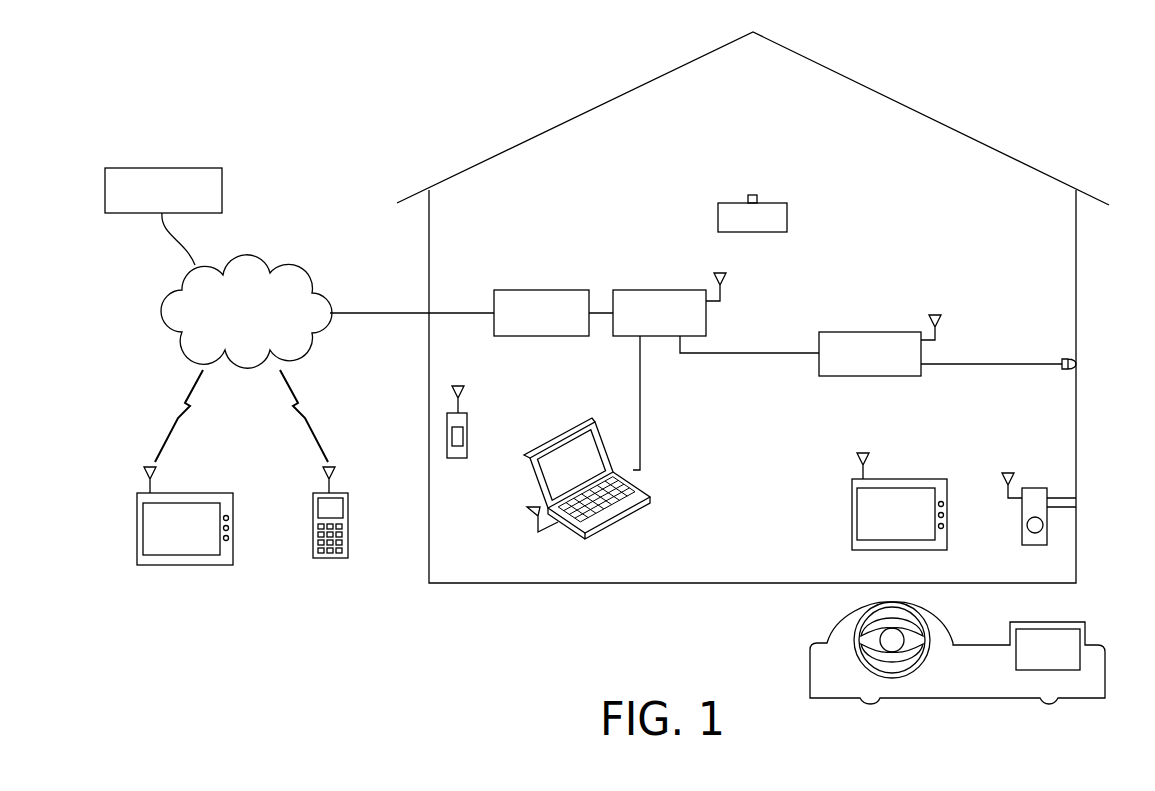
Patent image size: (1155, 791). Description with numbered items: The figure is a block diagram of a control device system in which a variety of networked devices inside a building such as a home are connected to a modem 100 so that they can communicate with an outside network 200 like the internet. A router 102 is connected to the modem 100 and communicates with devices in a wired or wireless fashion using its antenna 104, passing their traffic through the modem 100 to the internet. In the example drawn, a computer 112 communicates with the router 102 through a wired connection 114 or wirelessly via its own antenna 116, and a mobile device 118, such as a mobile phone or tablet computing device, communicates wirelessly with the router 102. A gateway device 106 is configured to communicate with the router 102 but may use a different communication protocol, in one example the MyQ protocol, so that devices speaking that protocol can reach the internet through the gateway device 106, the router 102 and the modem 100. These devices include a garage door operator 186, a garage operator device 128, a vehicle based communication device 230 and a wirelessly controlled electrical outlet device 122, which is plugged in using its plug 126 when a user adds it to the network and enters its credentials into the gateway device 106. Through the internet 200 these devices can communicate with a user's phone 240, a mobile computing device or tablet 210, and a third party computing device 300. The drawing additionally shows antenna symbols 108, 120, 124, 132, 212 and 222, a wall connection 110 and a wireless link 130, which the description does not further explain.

The modem 100 is at (547, 290).
The router 102 is at (658, 290).
The antenna 104 is at (723, 271).
The gateway device 106 is at (870, 332).
The gateway antenna 108 is at (937, 313).
The wired connection 110 is at (1067, 357).
The computer 112 is at (645, 483).
The wired connection 114 is at (640, 400).
The antenna 116 is at (530, 507).
The mobile device 118 is at (900, 550).
The television antenna 120 is at (868, 450).
The wirelessly controlled electrical outlet device 122 is at (1035, 488).
The wall device antenna 124 is at (1011, 471).
The plug 126 is at (1060, 508).
The garage operator device 128 is at (452, 414).
The wireless link 130 is at (452, 352).
The handheld device antenna 132 is at (455, 386).
The garage door operator 186 is at (770, 203).
The outside network 200 is at (258, 252).
The tablet 210 is at (233, 518).
The tablet antenna 212 is at (150, 466).
The mobile phone antenna 222 is at (333, 466).
The vehicle based communication device 230 is at (1048, 629).
The phone 240 is at (348, 520).
The third party computing device 300 is at (203, 168).